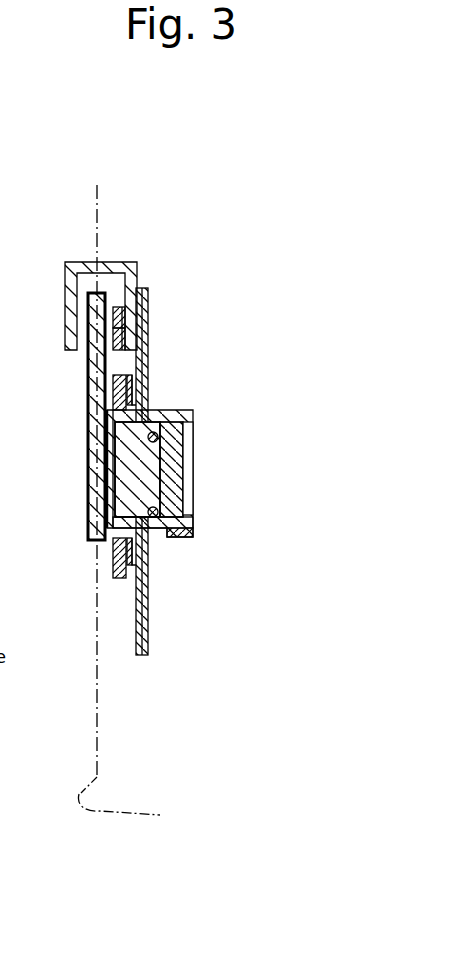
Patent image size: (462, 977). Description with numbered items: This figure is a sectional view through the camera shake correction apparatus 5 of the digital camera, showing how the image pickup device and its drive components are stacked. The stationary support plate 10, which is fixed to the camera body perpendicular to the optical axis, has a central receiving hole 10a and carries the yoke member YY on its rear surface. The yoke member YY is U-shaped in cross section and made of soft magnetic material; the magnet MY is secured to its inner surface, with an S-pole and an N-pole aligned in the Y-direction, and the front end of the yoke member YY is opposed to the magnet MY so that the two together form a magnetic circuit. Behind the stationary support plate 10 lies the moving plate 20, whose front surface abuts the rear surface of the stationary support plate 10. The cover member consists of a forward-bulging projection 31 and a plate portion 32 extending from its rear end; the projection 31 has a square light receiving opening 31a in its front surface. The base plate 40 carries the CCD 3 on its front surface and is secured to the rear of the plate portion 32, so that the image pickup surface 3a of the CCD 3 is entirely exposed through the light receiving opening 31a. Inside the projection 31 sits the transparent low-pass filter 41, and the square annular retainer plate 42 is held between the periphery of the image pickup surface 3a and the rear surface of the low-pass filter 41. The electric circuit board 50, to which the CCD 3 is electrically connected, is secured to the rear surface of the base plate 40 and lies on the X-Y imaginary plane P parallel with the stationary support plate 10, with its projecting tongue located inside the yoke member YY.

The CCD 3 is at (132, 497).
The image pickup surface 3a is at (157, 473).
The camera shake correction apparatus 5 is at (172, 277).
The stationary support plate 10 is at (143, 640).
The receiving hole 10a is at (138, 403).
The moving plate 20 is at (148, 612).
The projection 31 is at (175, 536).
The light receiving opening 31a is at (170, 531).
The plate portion 32 is at (120, 540).
The base plate 40 is at (105, 540).
The low-pass filter 41 is at (172, 487).
The retainer plate 42 is at (160, 435).
The electric circuit board 50 is at (90, 427).
The yoke member YY is at (106, 266).
The magnet MY is at (122, 308).
The X-Y imaginary plane P is at (127, 802).
The element S-pole is at (122, 317).
The element N-pole is at (122, 342).